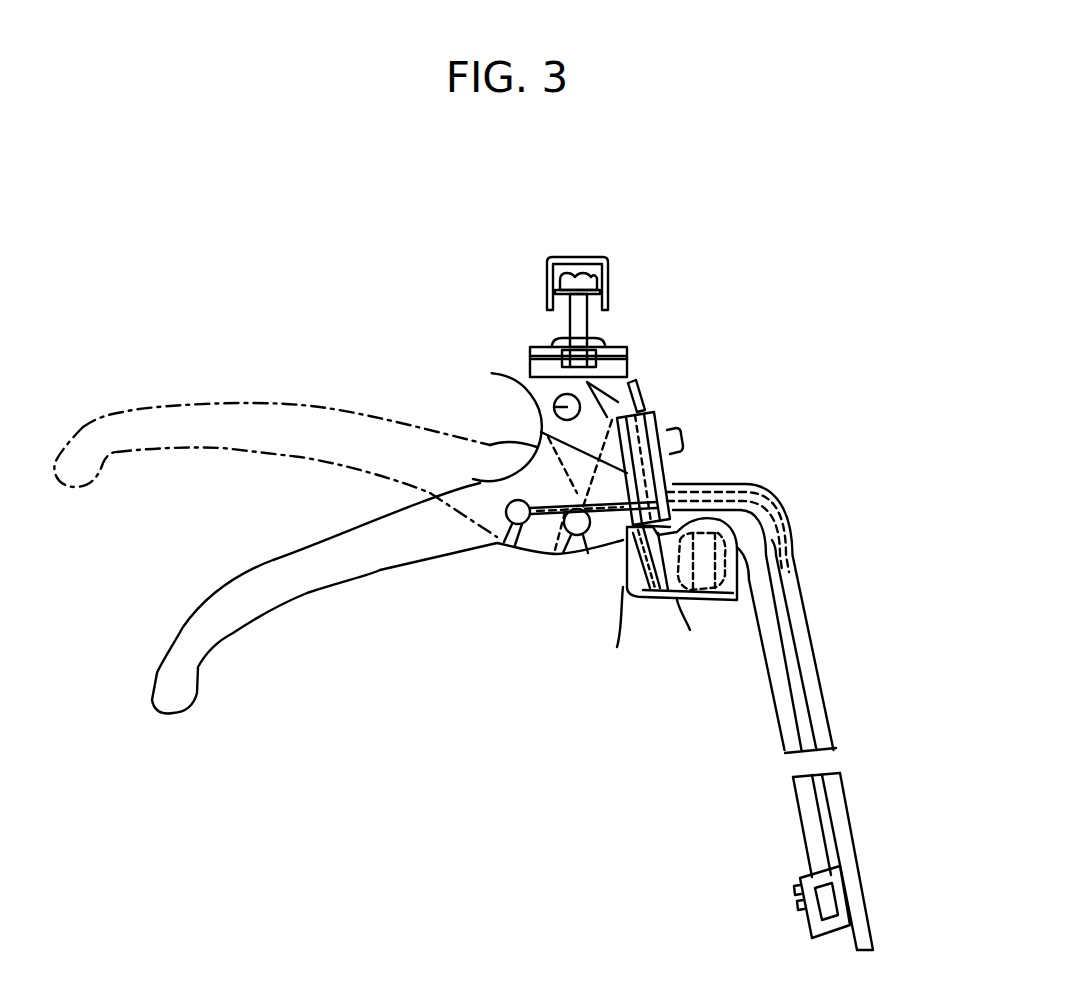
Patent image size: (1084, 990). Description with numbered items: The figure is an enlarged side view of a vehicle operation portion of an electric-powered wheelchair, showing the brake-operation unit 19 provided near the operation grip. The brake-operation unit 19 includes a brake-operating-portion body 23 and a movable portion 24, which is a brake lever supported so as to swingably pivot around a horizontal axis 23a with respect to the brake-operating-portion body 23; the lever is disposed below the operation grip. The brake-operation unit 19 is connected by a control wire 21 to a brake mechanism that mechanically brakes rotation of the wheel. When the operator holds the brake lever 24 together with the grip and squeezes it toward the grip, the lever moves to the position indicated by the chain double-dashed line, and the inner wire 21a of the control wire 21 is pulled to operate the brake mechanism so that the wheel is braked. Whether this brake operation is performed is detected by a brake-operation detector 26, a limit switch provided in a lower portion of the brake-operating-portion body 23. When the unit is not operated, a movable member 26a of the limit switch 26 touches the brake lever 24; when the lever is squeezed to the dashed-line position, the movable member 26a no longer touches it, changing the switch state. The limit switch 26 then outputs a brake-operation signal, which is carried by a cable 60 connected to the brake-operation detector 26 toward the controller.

The brake-operation unit 19 is at (486, 560).
The control wire 21 is at (792, 525).
The inner wire 21a is at (756, 488).
The brake-operating-portion body 23 is at (675, 472).
The horizontal axis 23a is at (553, 405).
The movable portion 24 is at (318, 405).
The brake-operation detector 26 is at (677, 608).
The movable member 26a is at (626, 560).
The cable 60 is at (790, 742).